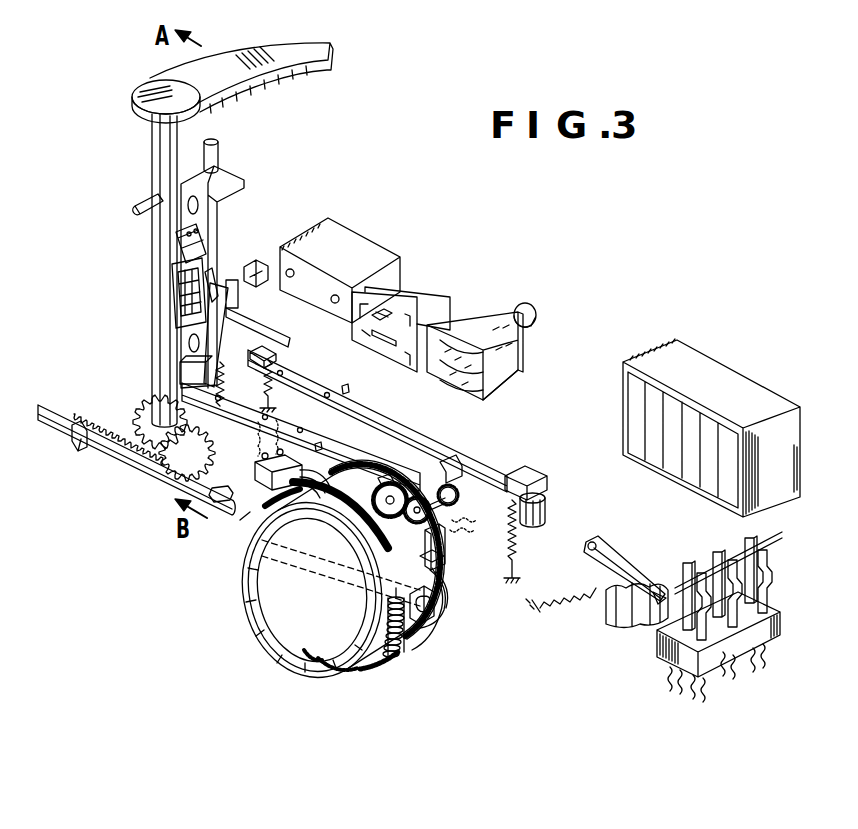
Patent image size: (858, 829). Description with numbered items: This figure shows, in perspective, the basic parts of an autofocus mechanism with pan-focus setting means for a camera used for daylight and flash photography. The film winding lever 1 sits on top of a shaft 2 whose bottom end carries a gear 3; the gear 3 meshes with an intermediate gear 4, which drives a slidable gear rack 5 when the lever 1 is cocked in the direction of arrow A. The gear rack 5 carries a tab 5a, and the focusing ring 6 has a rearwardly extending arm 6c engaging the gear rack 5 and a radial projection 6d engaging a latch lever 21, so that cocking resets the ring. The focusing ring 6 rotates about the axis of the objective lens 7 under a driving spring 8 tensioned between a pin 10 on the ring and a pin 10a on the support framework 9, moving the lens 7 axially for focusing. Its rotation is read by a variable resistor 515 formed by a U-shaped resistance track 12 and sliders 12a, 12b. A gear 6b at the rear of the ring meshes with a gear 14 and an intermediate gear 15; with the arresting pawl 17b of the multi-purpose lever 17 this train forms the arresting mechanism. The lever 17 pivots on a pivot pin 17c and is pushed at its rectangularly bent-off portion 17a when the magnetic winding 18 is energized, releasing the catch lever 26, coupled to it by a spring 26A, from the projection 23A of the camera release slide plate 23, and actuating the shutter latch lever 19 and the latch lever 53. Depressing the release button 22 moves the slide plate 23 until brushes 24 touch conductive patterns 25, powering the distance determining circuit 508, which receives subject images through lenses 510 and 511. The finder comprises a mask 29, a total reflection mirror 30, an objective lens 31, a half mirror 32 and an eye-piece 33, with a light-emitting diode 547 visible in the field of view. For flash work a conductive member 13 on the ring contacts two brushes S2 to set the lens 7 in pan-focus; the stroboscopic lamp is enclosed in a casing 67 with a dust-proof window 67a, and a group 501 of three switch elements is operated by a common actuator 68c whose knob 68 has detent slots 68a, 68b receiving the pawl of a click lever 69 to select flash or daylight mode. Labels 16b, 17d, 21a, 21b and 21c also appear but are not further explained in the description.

The film winding lever 1 is at (278, 58).
The shaft 2 is at (156, 150).
The gear 3 is at (140, 424).
The intermediate gear 4 is at (184, 462).
The gear rack 5 is at (116, 440).
The tab 5a is at (394, 662).
The focusing ring 6 is at (430, 636).
The gear 6b is at (444, 552).
The rearwardly extending arm 6c is at (350, 672).
The radial projection 6d is at (384, 480).
The objective lens 7 is at (310, 613).
The driving spring 8 is at (404, 642).
The support framework 9 is at (442, 604).
The pin 10 is at (312, 664).
The pin 10a is at (432, 600).
The resistance track 12 is at (341, 540).
The slider 12a is at (303, 545).
The slider 12b is at (244, 520).
The electrically conductive member 13 is at (438, 560).
The gear 14 is at (393, 486).
The intermediate gear 15 is at (420, 498).
The gear 16b is at (456, 500).
The multi-purpose lever 17 is at (386, 422).
The rectangularly bent-off portion 17a is at (530, 476).
The arresting pawl 17b is at (448, 468).
The pivot pin 17c is at (352, 380).
The spring 17d is at (518, 546).
The magnetic winding 18 is at (545, 520).
The latch lever 19 is at (280, 355).
The latch lever 21 is at (252, 430).
The wire 21a is at (304, 478).
The support bar upturned end 21b is at (185, 378).
The support bar pin 21c is at (319, 452).
The release button 22 is at (216, 158).
The camera release slide plate 23 is at (232, 170).
The projection 23A is at (214, 274).
The brushes 24 is at (178, 243).
The electrically conductive patterns 25 is at (176, 298).
The catch lever 26 is at (220, 322).
The spring 26A is at (246, 346).
The mask 29 is at (400, 320).
The total reflection mirror 30 is at (453, 302).
The objective lens 31 is at (496, 392).
The half mirror 32 is at (514, 350).
The eye-piece 33 is at (536, 313).
The latch lever 53 is at (257, 264).
The casing 67 is at (782, 475).
The dust-proof window 67a is at (640, 392).
The knob 68 is at (626, 628).
The detent slot 68a is at (620, 582).
The detent slot 68b is at (652, 594).
The common actuator 68c is at (758, 542).
The click lever 69 is at (584, 586).
The switch elements 501 is at (770, 636).
The distance determining circuit 508 is at (352, 245).
The lens 510 is at (291, 268).
The lens 511 is at (340, 295).
The variable resistor 515 is at (228, 502).
The light-emitting diode 547 is at (386, 310).
The brushes S2 is at (463, 530).